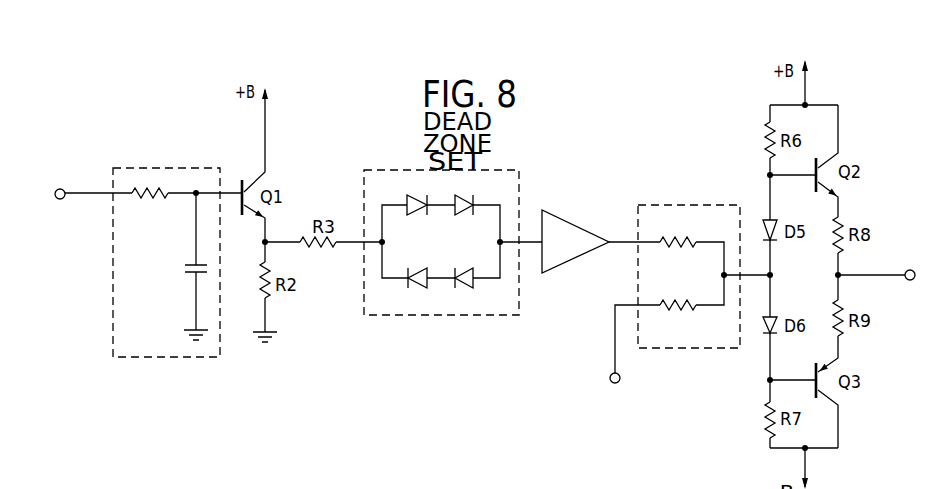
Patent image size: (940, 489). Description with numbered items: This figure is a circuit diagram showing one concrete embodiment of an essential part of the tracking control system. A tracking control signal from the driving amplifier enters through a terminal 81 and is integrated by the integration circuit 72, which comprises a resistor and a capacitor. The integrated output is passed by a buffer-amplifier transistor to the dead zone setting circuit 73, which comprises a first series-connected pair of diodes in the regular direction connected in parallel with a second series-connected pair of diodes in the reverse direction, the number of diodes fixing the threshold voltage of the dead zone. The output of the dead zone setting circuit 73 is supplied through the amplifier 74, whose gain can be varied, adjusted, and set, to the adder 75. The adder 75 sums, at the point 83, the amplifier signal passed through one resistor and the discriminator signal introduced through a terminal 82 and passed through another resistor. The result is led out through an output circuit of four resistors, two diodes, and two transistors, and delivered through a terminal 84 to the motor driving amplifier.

The integration circuit 72 is at (137, 167).
The dead zone setting circuit 73 is at (402, 169).
The amplifier 74 is at (571, 219).
The adder 75 is at (676, 205).
The terminal 81 is at (57, 187).
The terminal 82 is at (611, 386).
The point 83 is at (721, 275).
The terminal 84 is at (909, 269).